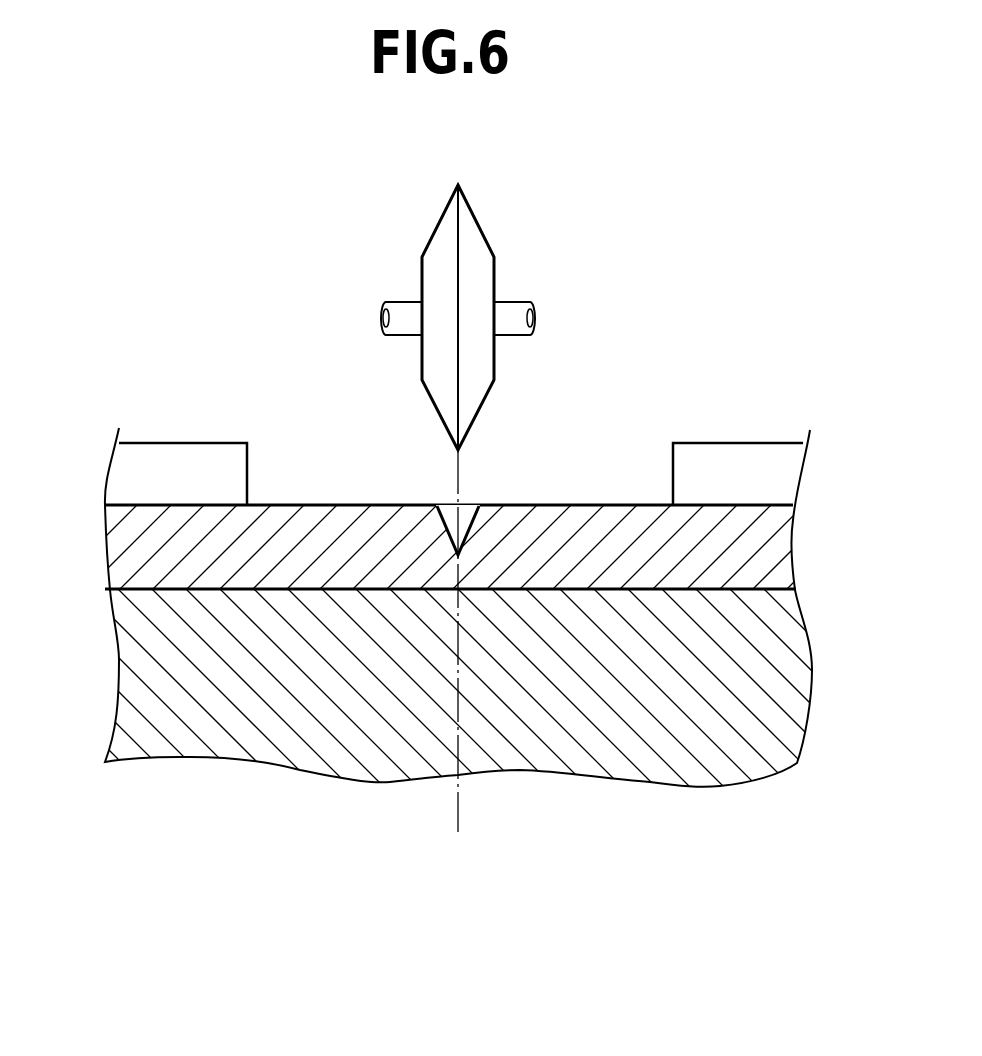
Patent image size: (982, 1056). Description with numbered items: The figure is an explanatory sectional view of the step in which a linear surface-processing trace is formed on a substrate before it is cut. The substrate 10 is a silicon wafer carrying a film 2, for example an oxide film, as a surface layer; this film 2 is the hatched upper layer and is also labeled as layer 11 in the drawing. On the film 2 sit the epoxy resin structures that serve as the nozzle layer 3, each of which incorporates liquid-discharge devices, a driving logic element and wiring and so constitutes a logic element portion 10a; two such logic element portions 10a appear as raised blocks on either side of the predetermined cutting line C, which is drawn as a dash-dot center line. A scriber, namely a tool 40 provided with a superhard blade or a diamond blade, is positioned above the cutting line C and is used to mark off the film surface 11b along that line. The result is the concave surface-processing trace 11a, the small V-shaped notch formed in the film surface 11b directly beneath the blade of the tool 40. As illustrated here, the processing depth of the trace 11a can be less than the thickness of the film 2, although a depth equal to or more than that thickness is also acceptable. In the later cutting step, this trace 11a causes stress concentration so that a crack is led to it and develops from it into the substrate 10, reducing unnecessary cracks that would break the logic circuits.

The film 2 is at (491, 644).
The nozzle layer 3 is at (175, 440).
The substrate 10 is at (660, 748).
The logic element portion 10a is at (461, 419).
The resist layer 11 is at (453, 492).
The surface-processing trace 11a is at (468, 517).
The film surface 11b is at (300, 505).
The tool 40 is at (473, 237).
The predetermined cutting line C is at (455, 480).